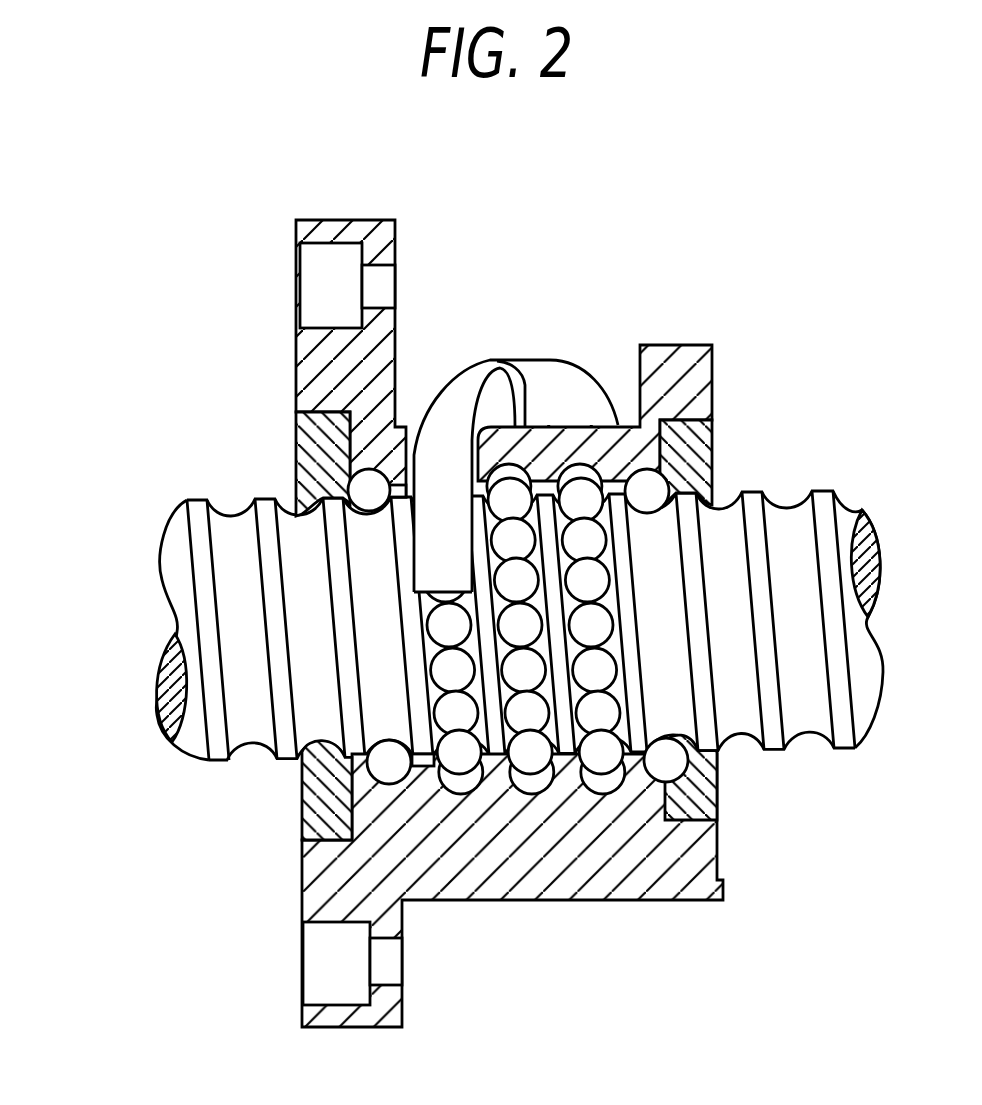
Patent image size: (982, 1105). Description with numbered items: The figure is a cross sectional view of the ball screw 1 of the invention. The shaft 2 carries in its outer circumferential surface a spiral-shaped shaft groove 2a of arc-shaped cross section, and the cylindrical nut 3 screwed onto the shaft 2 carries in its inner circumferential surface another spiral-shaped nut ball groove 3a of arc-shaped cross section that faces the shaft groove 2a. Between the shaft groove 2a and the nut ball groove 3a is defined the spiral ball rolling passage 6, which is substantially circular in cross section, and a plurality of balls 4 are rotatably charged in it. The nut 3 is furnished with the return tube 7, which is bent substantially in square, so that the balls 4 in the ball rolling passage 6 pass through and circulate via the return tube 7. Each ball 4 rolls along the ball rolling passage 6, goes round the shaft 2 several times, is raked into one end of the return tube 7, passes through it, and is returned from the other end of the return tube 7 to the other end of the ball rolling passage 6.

The ball screw 1 is at (126, 486).
The shaft 2 is at (237, 578).
The shaft groove 2a is at (776, 500).
The nut 3 is at (590, 888).
The nut ball groove 3a is at (388, 780).
The ball 4 is at (587, 625).
The ball rolling passage 6 is at (380, 762).
The return tube 7 is at (452, 398).